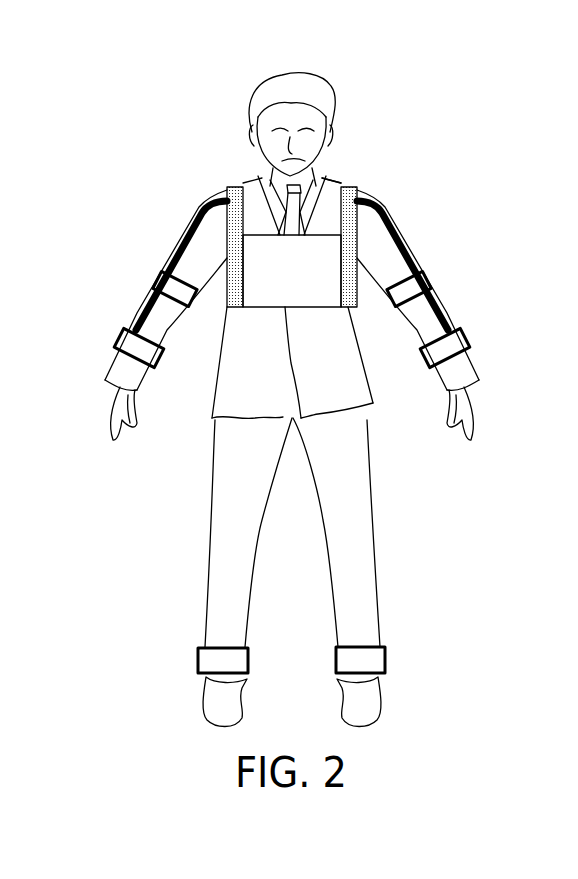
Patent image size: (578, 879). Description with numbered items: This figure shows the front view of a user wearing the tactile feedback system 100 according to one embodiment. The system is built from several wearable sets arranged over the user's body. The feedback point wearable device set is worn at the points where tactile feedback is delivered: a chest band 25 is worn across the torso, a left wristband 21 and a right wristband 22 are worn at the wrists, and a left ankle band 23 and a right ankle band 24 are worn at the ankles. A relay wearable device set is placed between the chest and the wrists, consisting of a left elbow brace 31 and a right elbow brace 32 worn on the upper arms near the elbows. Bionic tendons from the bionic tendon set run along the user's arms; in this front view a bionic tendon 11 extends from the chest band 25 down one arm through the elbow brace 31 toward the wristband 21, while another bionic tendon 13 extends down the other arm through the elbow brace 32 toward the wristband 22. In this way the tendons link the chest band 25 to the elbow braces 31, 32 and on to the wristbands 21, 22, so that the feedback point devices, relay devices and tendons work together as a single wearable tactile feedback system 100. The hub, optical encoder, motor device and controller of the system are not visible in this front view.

The tactile feedback system 100 is at (433, 117).
The chest band 25 is at (302, 280).
The bionic tendon 11 is at (395, 236).
The bionic tendon 13 is at (191, 236).
The left elbow brace 31 is at (424, 279).
The right elbow brace 32 is at (160, 280).
The left wristband 21 is at (462, 335).
The right wristband 22 is at (124, 337).
The left ankle band 23 is at (385, 662).
The right ankle band 24 is at (198, 662).